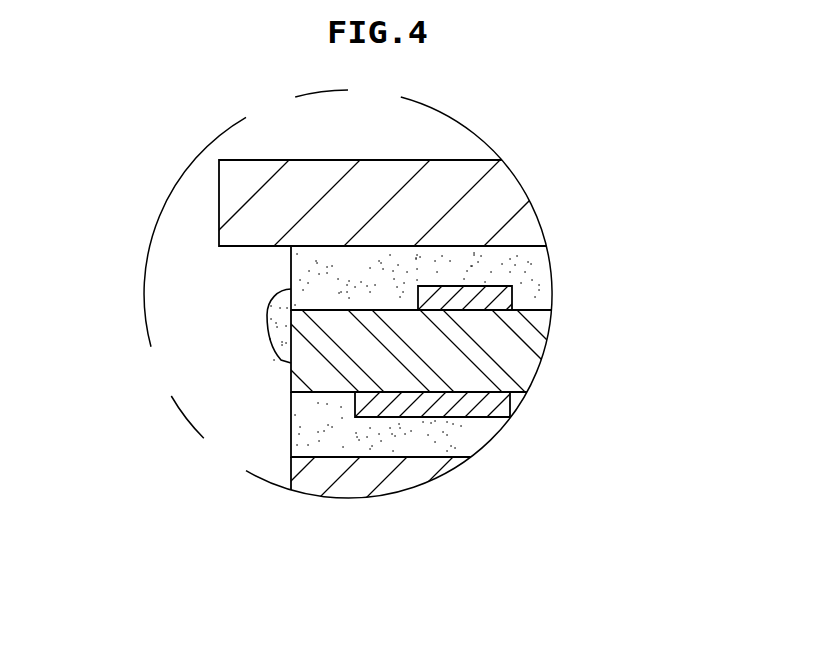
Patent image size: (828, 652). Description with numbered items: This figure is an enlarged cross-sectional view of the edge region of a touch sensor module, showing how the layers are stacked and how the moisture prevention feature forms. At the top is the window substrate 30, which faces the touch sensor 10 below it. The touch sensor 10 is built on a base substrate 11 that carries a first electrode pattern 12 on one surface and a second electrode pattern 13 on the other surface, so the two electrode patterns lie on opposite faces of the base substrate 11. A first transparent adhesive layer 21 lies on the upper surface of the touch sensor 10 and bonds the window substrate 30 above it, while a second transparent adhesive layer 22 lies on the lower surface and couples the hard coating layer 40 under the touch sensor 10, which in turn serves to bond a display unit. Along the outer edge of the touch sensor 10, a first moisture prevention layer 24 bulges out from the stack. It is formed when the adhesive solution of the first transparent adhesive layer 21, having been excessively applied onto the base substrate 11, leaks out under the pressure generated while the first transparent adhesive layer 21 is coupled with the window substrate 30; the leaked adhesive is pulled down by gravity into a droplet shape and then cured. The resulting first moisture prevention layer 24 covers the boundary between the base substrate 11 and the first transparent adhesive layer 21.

The touch sensor 10 is at (449, 353).
The base substrate 11 is at (522, 353).
The first electrode pattern 12 is at (497, 297).
The second electrode pattern 13 is at (484, 406).
The first transparent adhesive layer 21 is at (528, 265).
The second transparent adhesive layer 22 is at (465, 437).
The first moisture prevention layer 24 is at (272, 310).
The window substrate 30 is at (492, 208).
The hard coating layer 40 is at (359, 484).